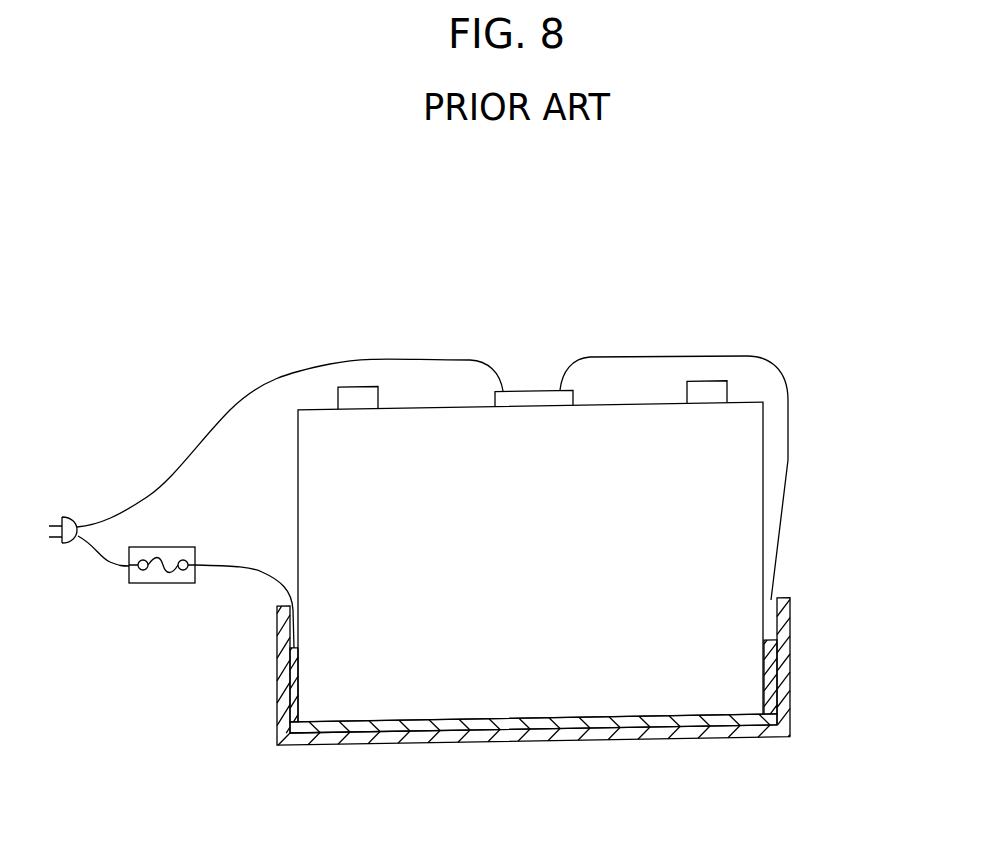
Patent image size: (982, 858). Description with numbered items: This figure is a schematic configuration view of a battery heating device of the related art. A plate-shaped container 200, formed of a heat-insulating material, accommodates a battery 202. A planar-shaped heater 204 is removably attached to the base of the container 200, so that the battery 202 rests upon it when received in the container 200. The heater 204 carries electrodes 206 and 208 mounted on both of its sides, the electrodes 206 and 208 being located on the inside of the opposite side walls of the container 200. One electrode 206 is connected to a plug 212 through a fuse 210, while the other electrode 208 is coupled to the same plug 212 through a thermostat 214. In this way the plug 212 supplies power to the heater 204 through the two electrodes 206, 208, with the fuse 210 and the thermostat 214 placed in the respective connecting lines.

The container 200 is at (790, 693).
The battery 202 is at (733, 542).
The heater 204 is at (546, 720).
The electrode 206 is at (293, 676).
The electrode 208 is at (768, 676).
The fuse 210 is at (176, 545).
The plug 212 is at (69, 516).
The thermostat 214 is at (531, 391).